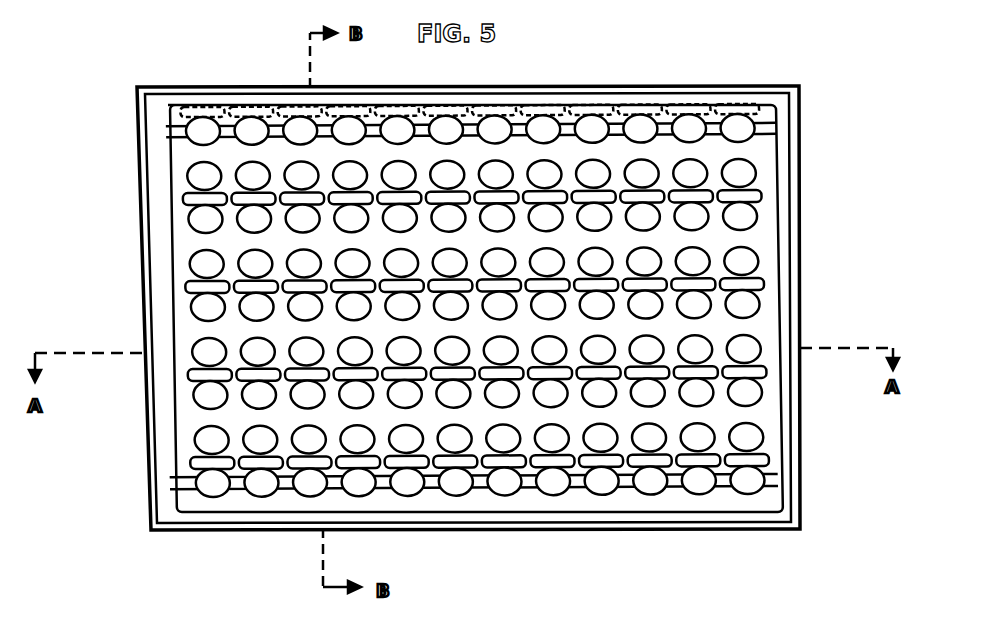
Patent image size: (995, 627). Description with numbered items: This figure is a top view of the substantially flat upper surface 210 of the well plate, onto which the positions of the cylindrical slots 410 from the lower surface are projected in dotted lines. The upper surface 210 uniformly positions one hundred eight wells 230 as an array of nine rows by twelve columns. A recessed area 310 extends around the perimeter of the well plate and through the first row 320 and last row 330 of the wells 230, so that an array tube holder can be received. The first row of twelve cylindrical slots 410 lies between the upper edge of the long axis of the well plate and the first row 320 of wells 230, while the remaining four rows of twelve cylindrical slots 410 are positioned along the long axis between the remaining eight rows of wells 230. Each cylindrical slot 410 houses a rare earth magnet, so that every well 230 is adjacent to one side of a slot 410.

The substantially flat upper surface 210 is at (633, 76).
The wells 230 is at (186, 222).
The recessed area 310 is at (155, 307).
The first row 320 is at (166, 131).
The last row 330 is at (170, 484).
The cylindrical slots 410 is at (178, 198).